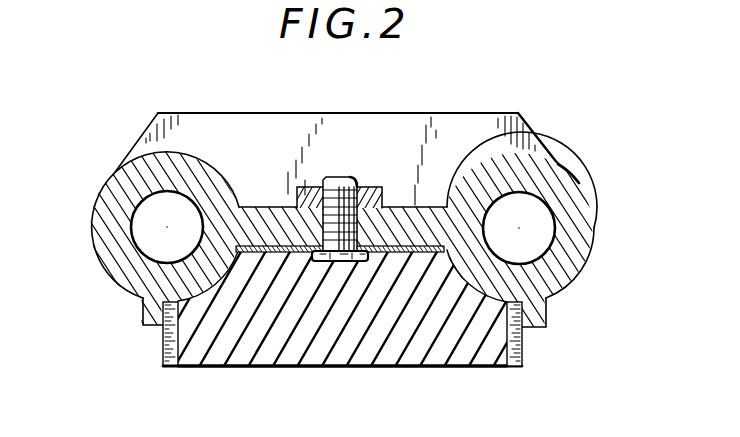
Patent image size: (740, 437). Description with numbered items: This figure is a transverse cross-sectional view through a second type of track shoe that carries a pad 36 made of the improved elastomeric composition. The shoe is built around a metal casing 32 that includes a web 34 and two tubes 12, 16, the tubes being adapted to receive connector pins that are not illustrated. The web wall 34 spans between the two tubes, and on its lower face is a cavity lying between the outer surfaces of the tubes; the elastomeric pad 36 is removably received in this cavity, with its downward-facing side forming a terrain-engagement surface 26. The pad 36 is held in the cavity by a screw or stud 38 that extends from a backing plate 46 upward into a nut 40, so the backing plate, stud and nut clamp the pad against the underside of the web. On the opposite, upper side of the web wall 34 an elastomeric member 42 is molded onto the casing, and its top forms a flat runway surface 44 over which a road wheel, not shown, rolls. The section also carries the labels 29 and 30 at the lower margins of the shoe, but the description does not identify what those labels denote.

The tube 12 is at (95, 207).
The tube 16 is at (568, 178).
The terrain-engagement surface 26 is at (467, 366).
The side rails 29 is at (163, 360).
The right rail 30 is at (522, 350).
The metal casing 32 is at (597, 240).
The web 34 is at (422, 208).
The pad 36 is at (237, 366).
The screw or stud 38 is at (338, 176).
The nut 40 is at (372, 187).
The elastomeric member 42 is at (337, 113).
The runway surface 44 is at (242, 113).
The backing plate 46 is at (252, 246).